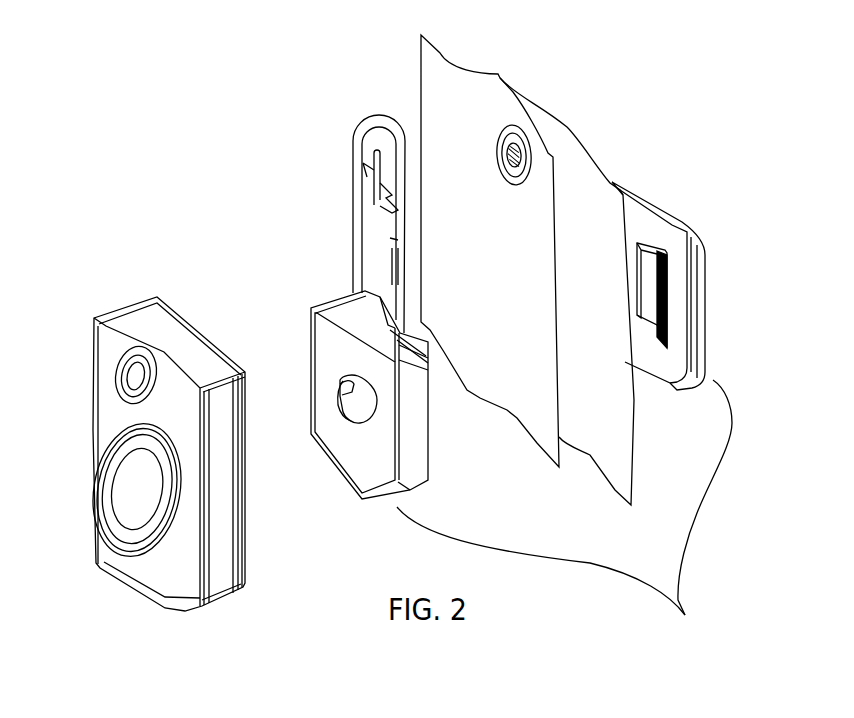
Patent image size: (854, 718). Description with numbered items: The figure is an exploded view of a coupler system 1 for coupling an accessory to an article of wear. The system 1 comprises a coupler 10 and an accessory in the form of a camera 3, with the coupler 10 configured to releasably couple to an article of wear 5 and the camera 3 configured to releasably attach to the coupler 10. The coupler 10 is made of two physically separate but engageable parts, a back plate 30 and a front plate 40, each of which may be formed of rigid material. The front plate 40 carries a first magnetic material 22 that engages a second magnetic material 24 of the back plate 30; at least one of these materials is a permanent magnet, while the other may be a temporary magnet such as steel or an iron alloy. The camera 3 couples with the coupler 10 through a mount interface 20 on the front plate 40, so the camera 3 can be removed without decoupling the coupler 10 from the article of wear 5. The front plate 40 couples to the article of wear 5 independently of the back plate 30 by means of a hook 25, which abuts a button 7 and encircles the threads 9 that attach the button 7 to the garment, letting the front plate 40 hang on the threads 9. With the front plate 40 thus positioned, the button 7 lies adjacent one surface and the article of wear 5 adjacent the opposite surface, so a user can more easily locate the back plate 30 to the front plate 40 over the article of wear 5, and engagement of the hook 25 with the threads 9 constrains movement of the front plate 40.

The system 1 is at (110, 148).
The camera 3 is at (92, 323).
The article of wear 5 is at (421, 46).
The button 7 is at (515, 150).
The threads 9 is at (517, 150).
The coupler 10 is at (564, 515).
The mount interface 20 is at (338, 390).
The first magnetic material 22 is at (436, 409).
The second magnetic material 24 is at (630, 265).
The hook 25 is at (364, 116).
The back plate 30 is at (708, 266).
The front plate 40 is at (318, 306).